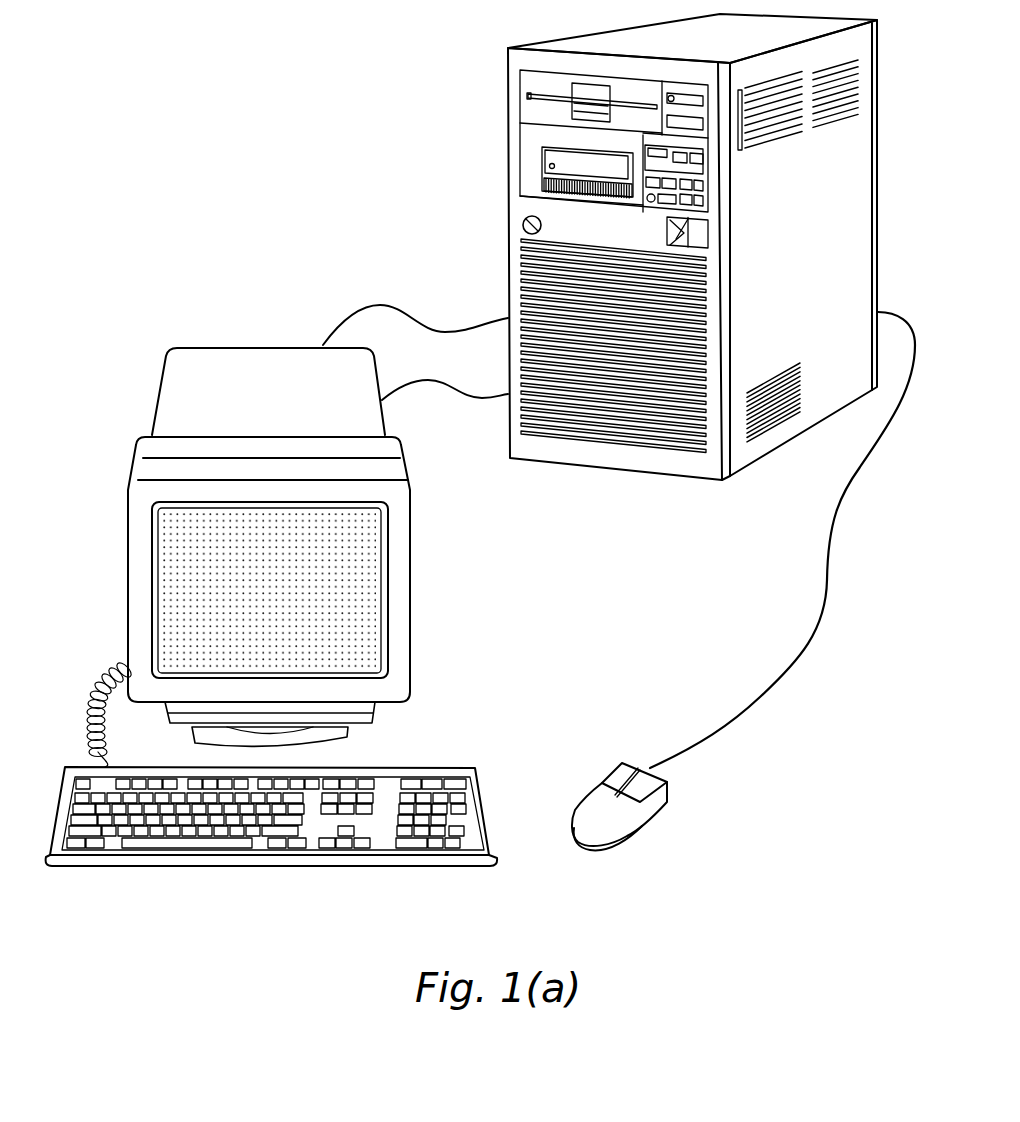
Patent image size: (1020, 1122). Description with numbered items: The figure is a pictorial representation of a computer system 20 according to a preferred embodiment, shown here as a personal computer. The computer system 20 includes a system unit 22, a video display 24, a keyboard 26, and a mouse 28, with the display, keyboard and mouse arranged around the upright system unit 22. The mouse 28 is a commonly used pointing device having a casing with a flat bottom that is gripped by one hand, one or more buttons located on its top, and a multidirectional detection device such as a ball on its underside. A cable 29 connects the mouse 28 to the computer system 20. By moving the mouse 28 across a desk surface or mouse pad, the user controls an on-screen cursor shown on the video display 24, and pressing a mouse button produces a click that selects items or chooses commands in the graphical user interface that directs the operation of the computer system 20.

The computer system 20 is at (297, 215).
The system unit 22 is at (525, 207).
The video display 24 is at (282, 370).
The keyboard 26 is at (303, 858).
The mouse 28 is at (625, 825).
The cable 29 is at (757, 706).